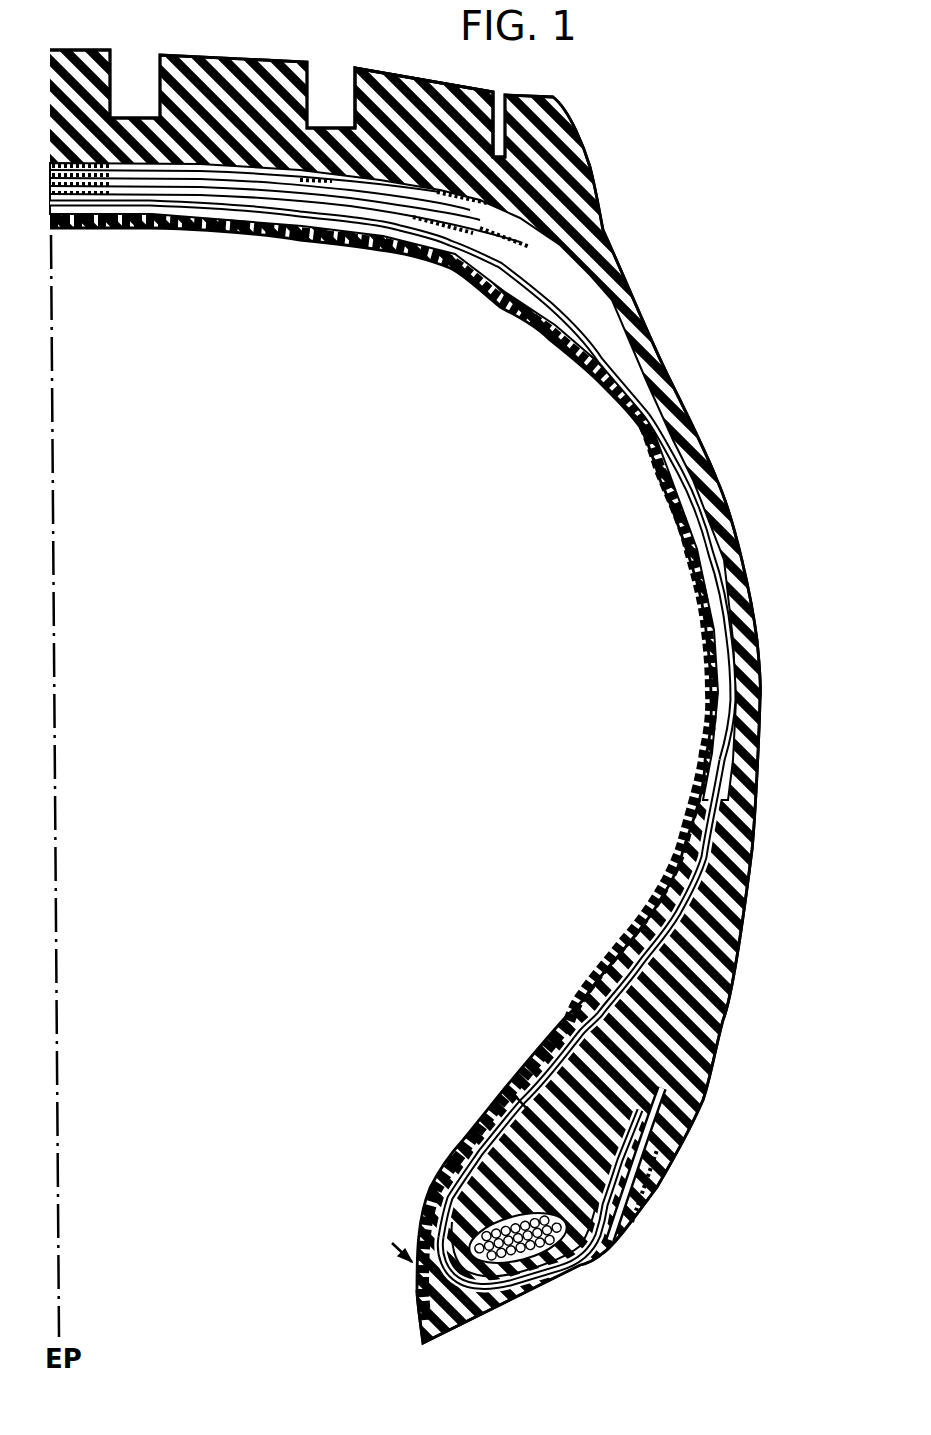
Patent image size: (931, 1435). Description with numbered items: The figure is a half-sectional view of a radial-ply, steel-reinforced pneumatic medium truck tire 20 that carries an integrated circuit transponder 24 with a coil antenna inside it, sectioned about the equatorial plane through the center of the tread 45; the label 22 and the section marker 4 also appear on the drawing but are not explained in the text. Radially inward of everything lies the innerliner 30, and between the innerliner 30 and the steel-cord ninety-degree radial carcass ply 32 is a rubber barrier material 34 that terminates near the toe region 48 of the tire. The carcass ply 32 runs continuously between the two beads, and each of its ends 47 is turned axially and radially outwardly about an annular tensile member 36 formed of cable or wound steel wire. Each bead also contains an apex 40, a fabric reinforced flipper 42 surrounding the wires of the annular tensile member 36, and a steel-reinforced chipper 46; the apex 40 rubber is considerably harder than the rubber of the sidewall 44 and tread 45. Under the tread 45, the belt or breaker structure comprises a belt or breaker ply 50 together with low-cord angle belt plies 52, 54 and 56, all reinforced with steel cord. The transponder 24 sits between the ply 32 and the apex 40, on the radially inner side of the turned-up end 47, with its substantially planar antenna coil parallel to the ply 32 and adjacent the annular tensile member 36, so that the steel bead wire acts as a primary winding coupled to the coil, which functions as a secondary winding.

The tire 20 is at (255, 50).
The tread 22 is at (593, 193).
The tread 45 is at (413, 83).
The integrated circuit transponder 24 is at (483, 1200).
The innerliner 30 is at (443, 273).
The carcass ply 32 is at (527, 302).
The rubber barrier material 34 is at (633, 427).
The annular tensile member 36 is at (522, 1260).
The apex 40 is at (700, 1053).
The fabric reinforced flipper 42 is at (593, 1263).
The sidewall 44 is at (745, 845).
The steel-reinforced chipper 46 is at (632, 1220).
The ply end 47 is at (693, 1110).
The toe region 48 is at (497, 1307).
The belt ply 50 is at (273, 205).
The low-cord angle belt ply 52 is at (245, 190).
The low-cord angle belt ply 54 is at (207, 178).
The low-cord angle belt ply 56 is at (170, 168).
The section line 4- 4 is at (450, 1161).